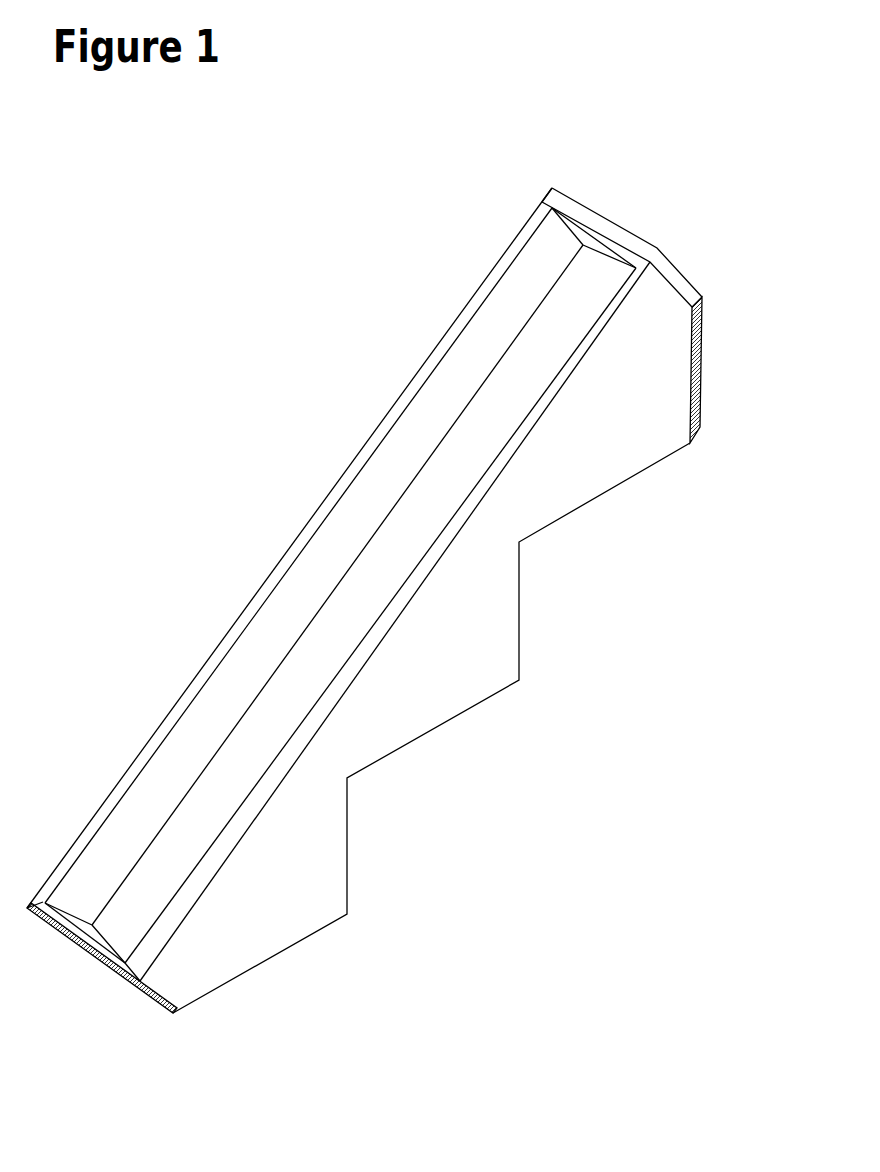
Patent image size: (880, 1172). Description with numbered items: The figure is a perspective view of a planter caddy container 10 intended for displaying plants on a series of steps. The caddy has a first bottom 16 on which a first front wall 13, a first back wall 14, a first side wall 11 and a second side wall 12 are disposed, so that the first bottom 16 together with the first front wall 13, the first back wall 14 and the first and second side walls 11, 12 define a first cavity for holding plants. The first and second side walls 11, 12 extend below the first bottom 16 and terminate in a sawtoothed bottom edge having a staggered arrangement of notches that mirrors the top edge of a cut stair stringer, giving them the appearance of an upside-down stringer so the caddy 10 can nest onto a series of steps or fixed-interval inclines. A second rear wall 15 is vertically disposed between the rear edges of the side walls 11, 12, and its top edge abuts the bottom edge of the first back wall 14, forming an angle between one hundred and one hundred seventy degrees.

The planter caddy container 10 is at (177, 552).
The first side wall 11 is at (353, 467).
The second side wall 12 is at (430, 705).
The first front wall 13 is at (93, 953).
The first back wall 14 is at (604, 226).
The second rear wall 15 is at (700, 428).
The first bottom 16 is at (462, 463).